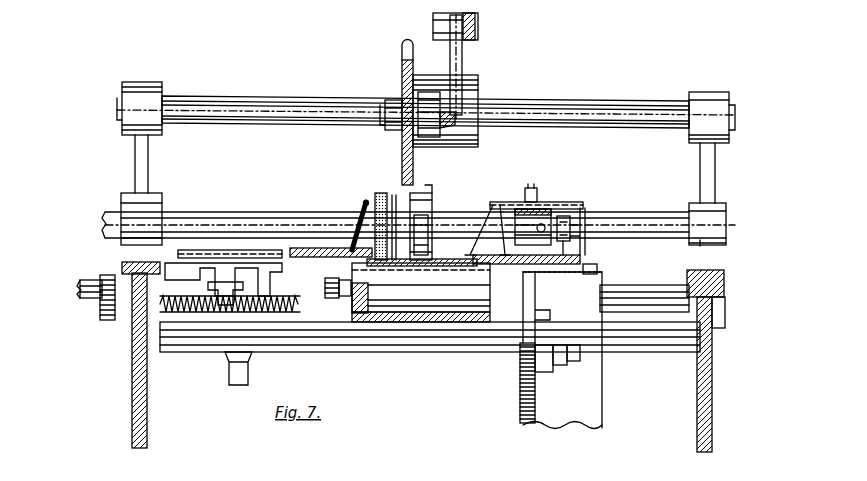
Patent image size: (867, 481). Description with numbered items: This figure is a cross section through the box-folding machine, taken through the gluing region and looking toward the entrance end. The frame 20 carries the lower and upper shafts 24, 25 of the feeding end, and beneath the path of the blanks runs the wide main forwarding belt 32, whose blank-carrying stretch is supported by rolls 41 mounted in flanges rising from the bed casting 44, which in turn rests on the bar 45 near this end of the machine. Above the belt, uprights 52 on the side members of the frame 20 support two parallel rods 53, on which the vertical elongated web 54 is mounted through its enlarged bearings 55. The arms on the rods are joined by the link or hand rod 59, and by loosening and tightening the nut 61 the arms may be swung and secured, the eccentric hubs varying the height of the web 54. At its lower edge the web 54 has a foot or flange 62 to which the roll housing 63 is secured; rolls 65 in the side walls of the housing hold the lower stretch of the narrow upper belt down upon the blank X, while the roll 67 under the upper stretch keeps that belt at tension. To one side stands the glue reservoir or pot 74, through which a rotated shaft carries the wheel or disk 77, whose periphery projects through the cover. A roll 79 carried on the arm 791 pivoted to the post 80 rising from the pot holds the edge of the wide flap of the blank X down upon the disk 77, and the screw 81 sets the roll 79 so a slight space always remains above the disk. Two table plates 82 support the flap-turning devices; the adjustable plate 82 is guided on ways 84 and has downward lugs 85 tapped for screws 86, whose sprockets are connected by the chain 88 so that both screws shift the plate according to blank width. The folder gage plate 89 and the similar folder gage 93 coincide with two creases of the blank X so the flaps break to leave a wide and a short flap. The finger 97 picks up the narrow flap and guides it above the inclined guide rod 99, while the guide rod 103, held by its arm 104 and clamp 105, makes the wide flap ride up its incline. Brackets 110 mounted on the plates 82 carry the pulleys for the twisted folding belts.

The frame 20 is at (132, 395).
The lower shaft 24 is at (652, 295).
The upper shaft 25 is at (600, 225).
The main forwarding belt 32 is at (415, 268).
The rolls 41 is at (395, 290).
The bed casting 44 is at (440, 320).
The bar 45 is at (500, 340).
The uprights 52 is at (135, 163).
The parallel rods 53 is at (578, 103).
The vertical elongated web 54 is at (410, 150).
The bearings 55 is at (402, 78).
The link or hand rod 59 is at (478, 38).
The nut 61 is at (433, 22).
The foot or flange 62 is at (432, 195).
The roll housing 63 is at (387, 215).
The rolls 65 is at (428, 222).
The roll 67 is at (478, 130).
The glue reservoir or pot 74 is at (603, 405).
The wheel or disk 77 is at (535, 388).
The roll 79 is at (540, 275).
The post 80 is at (640, 237).
The screw 81 is at (597, 269).
The table plates 82 is at (285, 250).
The ways 84 is at (175, 262).
The lugs 85 is at (238, 282).
The screws 86 is at (183, 330).
The chain 88 is at (108, 320).
The folder gage plate 89 is at (470, 208).
The folder gage 93 is at (392, 200).
The finger 97 is at (331, 244).
The inclined guide rod 99 is at (360, 212).
The guide rod 103 is at (422, 253).
The arm 104 is at (560, 204).
The clamp 105 is at (588, 185).
The brackets 110 is at (726, 243).
The arm 791 is at (572, 222).
The box blank X is at (540, 198).